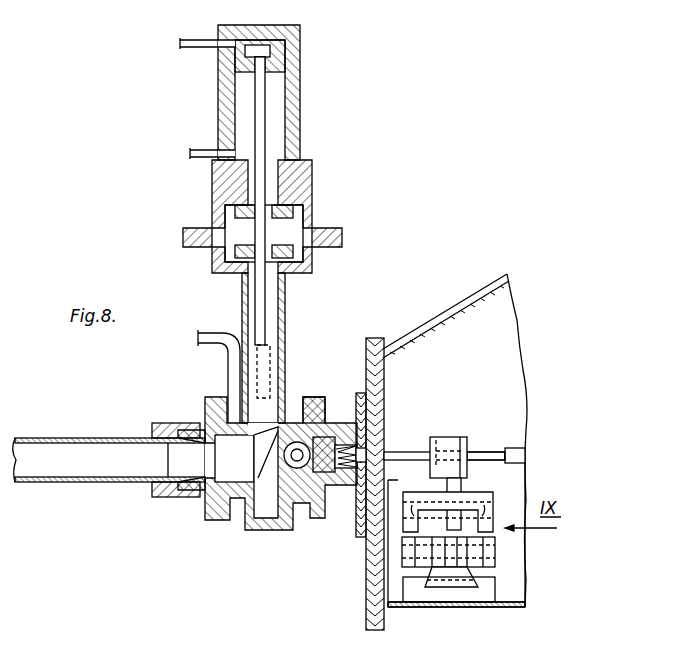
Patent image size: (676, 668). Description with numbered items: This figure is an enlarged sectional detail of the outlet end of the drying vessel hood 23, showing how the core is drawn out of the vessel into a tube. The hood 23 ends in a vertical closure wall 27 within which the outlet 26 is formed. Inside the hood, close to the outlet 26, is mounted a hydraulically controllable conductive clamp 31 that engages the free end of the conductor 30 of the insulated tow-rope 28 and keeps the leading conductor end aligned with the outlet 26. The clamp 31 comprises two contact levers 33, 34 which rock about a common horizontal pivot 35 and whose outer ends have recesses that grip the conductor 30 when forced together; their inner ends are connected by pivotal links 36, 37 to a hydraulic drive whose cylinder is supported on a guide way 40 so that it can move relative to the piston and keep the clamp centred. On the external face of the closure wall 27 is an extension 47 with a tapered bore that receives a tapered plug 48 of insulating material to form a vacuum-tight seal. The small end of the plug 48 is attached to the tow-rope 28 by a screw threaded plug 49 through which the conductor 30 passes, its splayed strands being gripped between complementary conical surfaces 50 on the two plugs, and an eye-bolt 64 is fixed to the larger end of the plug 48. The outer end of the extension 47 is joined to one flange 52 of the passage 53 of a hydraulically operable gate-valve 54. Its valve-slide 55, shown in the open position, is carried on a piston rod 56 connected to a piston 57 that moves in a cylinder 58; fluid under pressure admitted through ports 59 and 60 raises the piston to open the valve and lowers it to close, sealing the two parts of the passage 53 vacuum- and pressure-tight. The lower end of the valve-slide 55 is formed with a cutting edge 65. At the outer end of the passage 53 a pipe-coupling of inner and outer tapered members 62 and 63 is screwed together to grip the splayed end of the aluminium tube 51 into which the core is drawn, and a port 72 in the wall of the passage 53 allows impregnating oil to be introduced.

The hood 23 is at (468, 303).
The outlet 26 is at (380, 447).
The vertical closure wall 27 is at (385, 378).
The insulated tow-rope 28 is at (512, 450).
The conductor 30 is at (493, 450).
The clamp 31 is at (503, 487).
The contact lever 33 is at (445, 440).
The contact lever 34 is at (465, 440).
The pivot 35 is at (493, 512).
The link 36 is at (403, 552).
The link 37 is at (495, 553).
The guide way 40 is at (448, 587).
The extension 47 is at (335, 430).
The tapered plug 48 is at (297, 518).
The screw threaded plug 49 is at (372, 447).
The conical surfaces 50 is at (343, 490).
The aluminium tube 51 is at (67, 438).
The flange 52 is at (310, 397).
The passage 53 is at (253, 447).
The gate-valve 54 is at (292, 307).
The valve-slide 55 is at (257, 378).
The piston rod 56 is at (262, 238).
The piston 57 is at (282, 63).
The cylinder 58 is at (300, 115).
The port 59 is at (197, 39).
The port 60 is at (198, 151).
The inner tapered member 62 is at (178, 483).
The outer tapered member 63 is at (152, 495).
The eye-bolt 64 is at (267, 470).
The cutting edge 65 is at (205, 513).
The port 72 is at (227, 335).